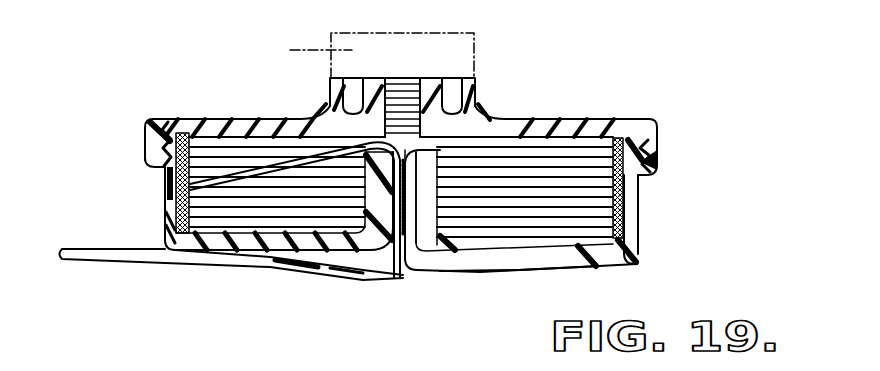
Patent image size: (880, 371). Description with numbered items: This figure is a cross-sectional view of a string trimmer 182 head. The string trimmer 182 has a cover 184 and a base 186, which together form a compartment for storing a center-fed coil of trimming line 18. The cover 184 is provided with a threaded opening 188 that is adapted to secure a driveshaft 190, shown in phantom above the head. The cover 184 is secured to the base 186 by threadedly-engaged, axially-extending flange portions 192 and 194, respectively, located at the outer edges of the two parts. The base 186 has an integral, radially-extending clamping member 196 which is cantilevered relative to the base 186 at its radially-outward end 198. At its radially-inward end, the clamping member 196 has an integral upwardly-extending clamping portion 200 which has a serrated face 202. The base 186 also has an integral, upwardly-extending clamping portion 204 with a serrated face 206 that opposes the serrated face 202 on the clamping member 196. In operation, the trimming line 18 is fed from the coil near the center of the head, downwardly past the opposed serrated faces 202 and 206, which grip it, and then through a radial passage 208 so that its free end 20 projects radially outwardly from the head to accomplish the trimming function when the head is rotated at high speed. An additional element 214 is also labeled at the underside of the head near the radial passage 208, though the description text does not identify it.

The trimming line 18 is at (233, 178).
The free end 20 is at (88, 259).
The string trimmer 182 is at (549, 80).
The cover 184 is at (596, 122).
The base 186 is at (637, 262).
The threaded opening 188 is at (400, 78).
The driveshaft 190 is at (318, 50).
The flange portion 192 is at (143, 144).
The flange portion 194 is at (168, 168).
The clamping member 196 is at (485, 265).
The radially-outward end 198 is at (566, 268).
The clamping portion 200 is at (437, 194).
The serrated face 202 is at (402, 270).
The clamping portion 204 is at (363, 197).
The serrated face 206 is at (433, 175).
The radial passage 208 is at (282, 258).
The weld joint 214 is at (363, 268).